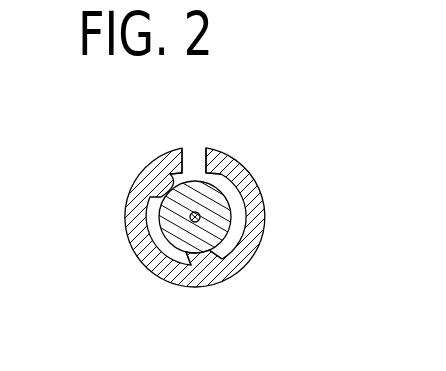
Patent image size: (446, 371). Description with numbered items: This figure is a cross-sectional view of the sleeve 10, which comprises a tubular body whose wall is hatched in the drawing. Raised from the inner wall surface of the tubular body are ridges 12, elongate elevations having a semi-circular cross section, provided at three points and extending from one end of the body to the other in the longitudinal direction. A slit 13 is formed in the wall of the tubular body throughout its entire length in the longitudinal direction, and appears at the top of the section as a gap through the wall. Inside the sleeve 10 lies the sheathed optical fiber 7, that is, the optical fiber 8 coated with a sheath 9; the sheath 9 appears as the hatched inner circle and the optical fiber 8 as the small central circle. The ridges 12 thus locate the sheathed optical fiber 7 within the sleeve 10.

The sheathed optical fiber 7 is at (141, 263).
The optical fiber 8 is at (190, 218).
The sheath 9 is at (212, 230).
The sleeve 10 is at (211, 192).
The ridges 12 is at (225, 258).
The slit 13 is at (195, 157).